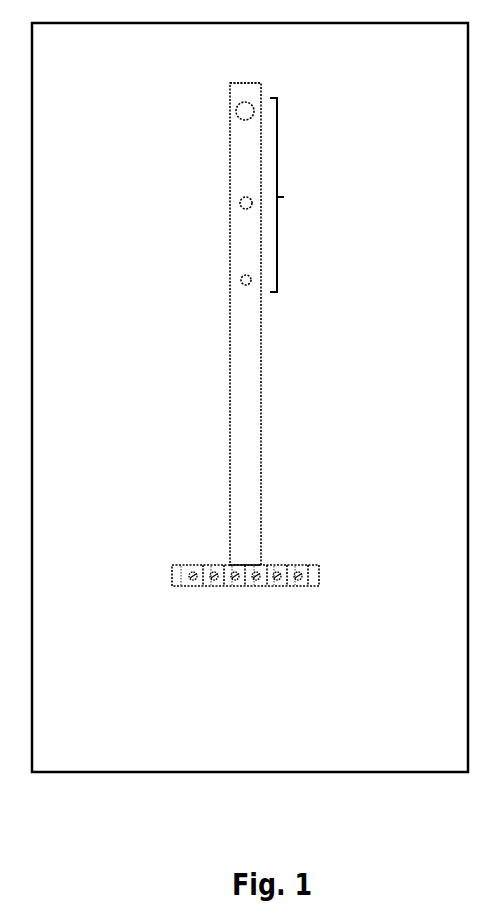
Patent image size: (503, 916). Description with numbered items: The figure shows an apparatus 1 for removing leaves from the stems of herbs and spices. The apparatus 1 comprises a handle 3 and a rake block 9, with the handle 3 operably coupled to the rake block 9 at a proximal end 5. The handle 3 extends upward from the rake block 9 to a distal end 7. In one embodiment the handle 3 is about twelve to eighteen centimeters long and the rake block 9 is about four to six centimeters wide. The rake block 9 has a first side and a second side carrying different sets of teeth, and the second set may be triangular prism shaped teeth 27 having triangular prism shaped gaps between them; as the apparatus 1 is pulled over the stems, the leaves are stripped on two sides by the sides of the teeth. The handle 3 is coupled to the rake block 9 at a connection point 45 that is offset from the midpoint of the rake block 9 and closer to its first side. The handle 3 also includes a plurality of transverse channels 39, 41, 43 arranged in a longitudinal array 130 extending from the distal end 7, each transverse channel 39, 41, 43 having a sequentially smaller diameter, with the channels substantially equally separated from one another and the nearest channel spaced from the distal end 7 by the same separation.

The apparatus 1 is at (357, 146).
The handle 3 is at (260, 368).
The proximal end 5 is at (257, 565).
The distal end 7 is at (242, 83).
The rake block 9 is at (320, 577).
The triangular prism shaped teeth 27 is at (195, 573).
The transverse channel 39 is at (240, 113).
The transverse channel 41 is at (240, 203).
The transverse channel 43 is at (240, 280).
The connection point 45 is at (247, 565).
The longitudinal array 130 is at (308, 195).